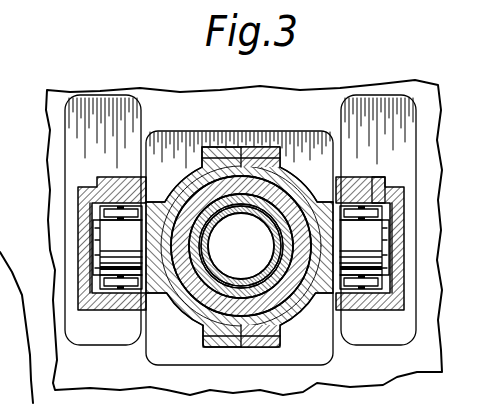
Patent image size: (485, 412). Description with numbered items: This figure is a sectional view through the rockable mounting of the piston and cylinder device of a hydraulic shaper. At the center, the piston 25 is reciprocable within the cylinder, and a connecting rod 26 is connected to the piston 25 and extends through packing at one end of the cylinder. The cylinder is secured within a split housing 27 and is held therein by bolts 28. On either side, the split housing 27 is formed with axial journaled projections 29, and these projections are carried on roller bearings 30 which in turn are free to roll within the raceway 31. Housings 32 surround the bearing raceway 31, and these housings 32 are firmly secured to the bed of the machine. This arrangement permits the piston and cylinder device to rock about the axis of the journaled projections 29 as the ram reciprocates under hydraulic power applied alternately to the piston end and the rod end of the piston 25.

The piston 25 is at (274, 210).
The connecting rod 26 is at (276, 236).
The split housing 27 is at (189, 318).
The bolts 28 is at (283, 156).
The axial journaled projections 29 is at (108, 232).
The roller bearings 30 is at (103, 206).
The raceway 31 is at (372, 178).
The housings 32 is at (111, 309).